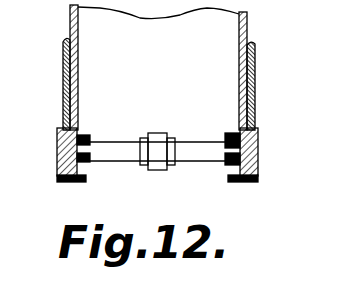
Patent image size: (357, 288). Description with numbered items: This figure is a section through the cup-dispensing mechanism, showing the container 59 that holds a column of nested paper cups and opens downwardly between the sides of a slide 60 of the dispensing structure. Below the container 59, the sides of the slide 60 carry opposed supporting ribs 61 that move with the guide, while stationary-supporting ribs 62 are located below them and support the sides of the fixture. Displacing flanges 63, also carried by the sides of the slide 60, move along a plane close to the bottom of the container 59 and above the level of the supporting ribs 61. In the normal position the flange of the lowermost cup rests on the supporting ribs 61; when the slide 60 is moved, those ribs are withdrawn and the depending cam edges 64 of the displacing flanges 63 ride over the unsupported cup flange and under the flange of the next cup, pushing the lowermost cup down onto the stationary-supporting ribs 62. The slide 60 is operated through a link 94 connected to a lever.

The container 59 is at (247, 28).
The slide 60 is at (240, 166).
The supporting ribs 61 is at (57, 147).
The stationary-supporting ribs 62 is at (82, 180).
The displacing flanges 63 is at (82, 131).
The depending cam edges 64 is at (88, 146).
The link 94 is at (162, 131).